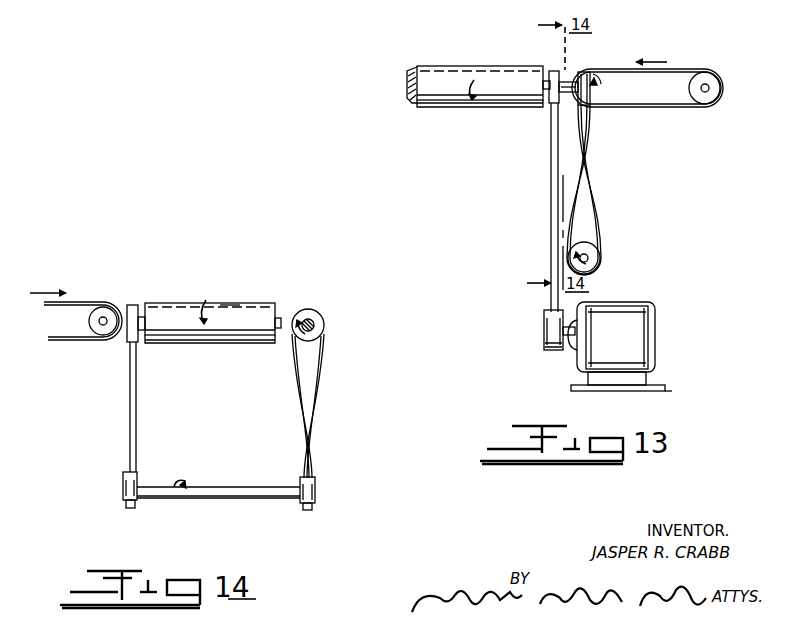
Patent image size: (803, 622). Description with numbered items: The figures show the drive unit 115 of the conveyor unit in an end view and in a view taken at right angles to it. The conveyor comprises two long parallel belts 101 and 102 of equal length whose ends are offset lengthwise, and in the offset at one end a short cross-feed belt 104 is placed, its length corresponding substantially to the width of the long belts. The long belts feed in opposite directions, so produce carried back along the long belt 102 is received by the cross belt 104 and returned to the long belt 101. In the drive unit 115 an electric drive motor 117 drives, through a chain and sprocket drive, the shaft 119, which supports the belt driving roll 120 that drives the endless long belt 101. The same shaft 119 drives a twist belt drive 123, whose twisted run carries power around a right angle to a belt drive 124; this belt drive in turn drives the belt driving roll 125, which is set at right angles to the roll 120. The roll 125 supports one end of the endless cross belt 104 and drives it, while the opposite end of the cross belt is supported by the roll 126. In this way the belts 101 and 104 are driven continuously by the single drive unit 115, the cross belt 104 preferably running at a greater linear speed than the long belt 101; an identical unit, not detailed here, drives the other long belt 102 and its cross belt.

In FIG. 13, the elongated belt 101 is at (477, 66).
In FIG. 14, the elongated belt 102 is at (90, 300).
In FIG. 13, the cross-feed belt 104 is at (664, 108).
In FIG. 14, the cross-feed belt 104 is at (168, 303).
In FIG. 13, the drive unit 115 is at (534, 271).
In FIG. 13, the electric drive motor 117 is at (638, 300).
In FIG. 13, the shaft 119 is at (551, 70).
In FIG. 14, the shaft 119 is at (312, 322).
In FIG. 13, the belt driving roll 120 is at (410, 70).
In FIG. 13, the twist belt drive 123 is at (592, 165).
In FIG. 14, the twist belt drive 123 is at (318, 428).
In FIG. 14, the belt drive 124 is at (130, 400).
In FIG. 13, the belt driving roll 125 is at (595, 76).
In FIG. 14, the belt driving roll 125 is at (229, 303).
In FIG. 13, the roll 126 is at (712, 74).